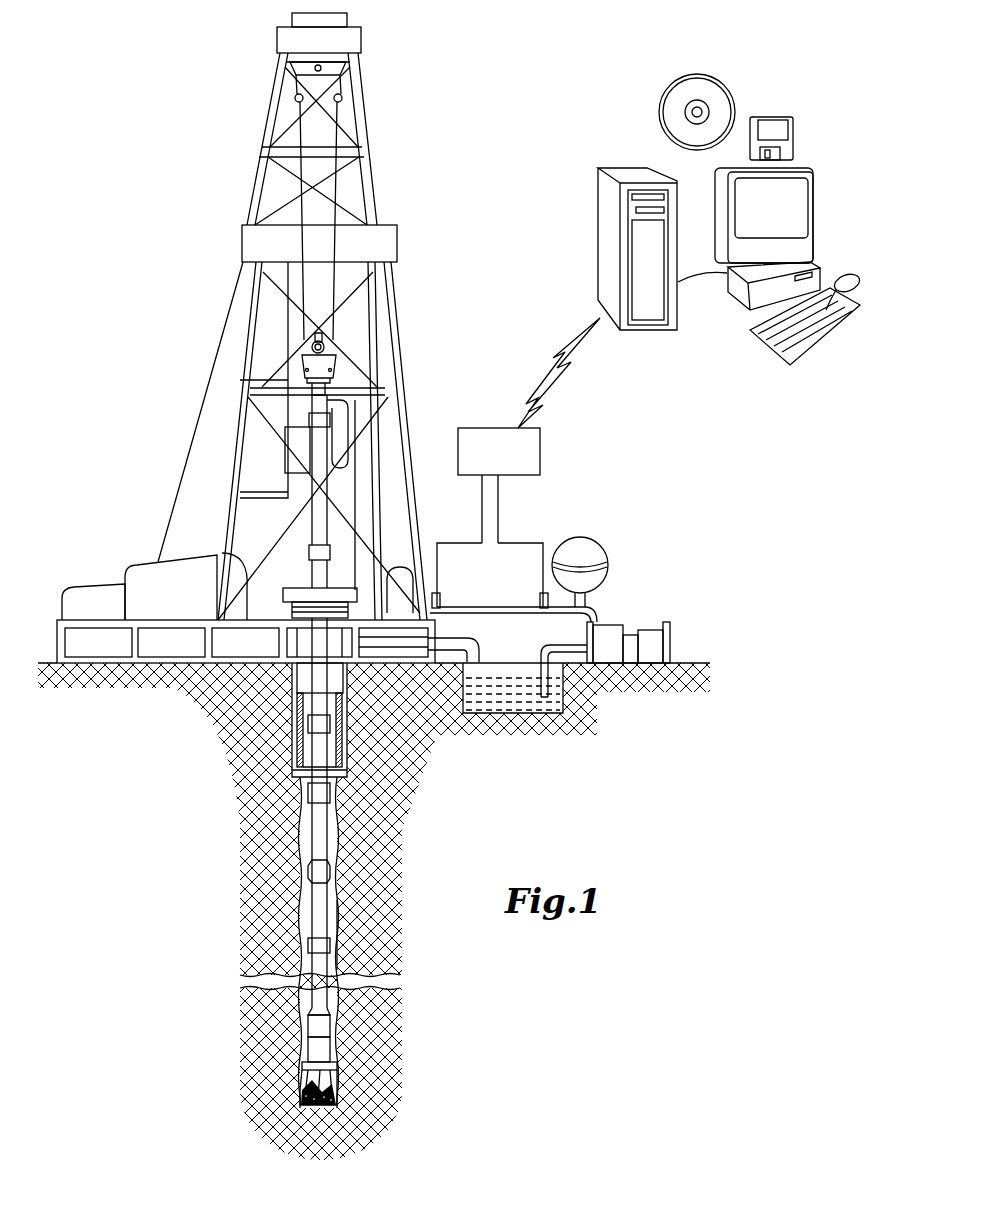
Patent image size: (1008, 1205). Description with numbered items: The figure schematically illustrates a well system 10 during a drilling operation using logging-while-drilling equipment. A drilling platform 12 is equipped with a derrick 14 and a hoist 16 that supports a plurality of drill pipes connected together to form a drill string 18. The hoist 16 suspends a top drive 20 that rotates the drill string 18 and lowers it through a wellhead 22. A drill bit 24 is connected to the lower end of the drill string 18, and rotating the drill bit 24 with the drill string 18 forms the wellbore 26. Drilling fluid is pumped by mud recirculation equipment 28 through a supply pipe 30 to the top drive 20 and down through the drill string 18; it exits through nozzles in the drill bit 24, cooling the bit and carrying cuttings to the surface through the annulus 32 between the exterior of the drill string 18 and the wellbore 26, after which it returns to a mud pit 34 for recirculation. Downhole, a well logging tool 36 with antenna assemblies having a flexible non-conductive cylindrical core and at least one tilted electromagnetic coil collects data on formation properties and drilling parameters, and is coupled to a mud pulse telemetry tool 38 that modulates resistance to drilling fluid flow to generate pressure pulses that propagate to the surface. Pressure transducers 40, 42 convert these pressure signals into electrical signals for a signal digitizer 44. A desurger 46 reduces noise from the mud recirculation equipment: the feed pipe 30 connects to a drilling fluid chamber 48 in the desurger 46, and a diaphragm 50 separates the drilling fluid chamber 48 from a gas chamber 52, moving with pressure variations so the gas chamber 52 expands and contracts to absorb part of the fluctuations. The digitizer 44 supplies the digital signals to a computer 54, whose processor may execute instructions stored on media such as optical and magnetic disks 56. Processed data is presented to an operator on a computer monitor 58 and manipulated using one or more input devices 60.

The well system 10 is at (148, 129).
The drilling platform 12 is at (95, 622).
The derrick 14 is at (375, 165).
The hoist 16 is at (330, 357).
The drill string 18 is at (322, 842).
The top drive 20 is at (322, 440).
The wellhead 22 is at (290, 570).
The drill bit 24 is at (333, 1095).
The wellbore 26 is at (340, 893).
The mud recirculation equipment 28 is at (618, 628).
The supply pipe 30 is at (600, 615).
The annulus 32 is at (338, 932).
The mud pit 34 is at (524, 706).
The well logging tool 36 is at (313, 1045).
The mud pulse telemetry tool 38 is at (313, 1025).
The pressure transducer 40 is at (437, 597).
The pressure transducer 42 is at (545, 597).
The signal digitizer 44 is at (511, 465).
The desurger 46 is at (580, 543).
The drilling fluid chamber 48 is at (603, 577).
The diaphragm 50 is at (604, 552).
The gas chamber 52 is at (592, 545).
The computer 54 is at (630, 172).
The optical and magnetic disks 56 is at (772, 117).
The computer monitor 58 is at (810, 170).
The input devices 60 is at (838, 278).